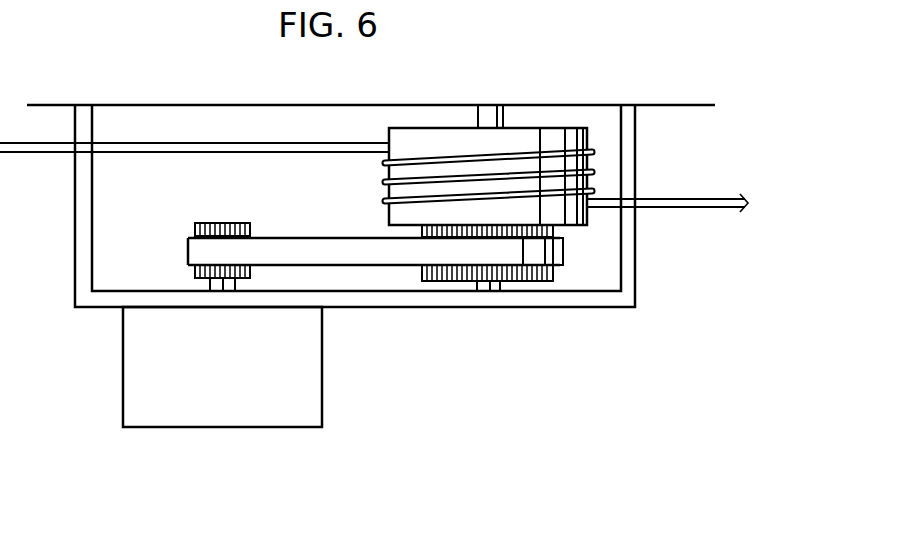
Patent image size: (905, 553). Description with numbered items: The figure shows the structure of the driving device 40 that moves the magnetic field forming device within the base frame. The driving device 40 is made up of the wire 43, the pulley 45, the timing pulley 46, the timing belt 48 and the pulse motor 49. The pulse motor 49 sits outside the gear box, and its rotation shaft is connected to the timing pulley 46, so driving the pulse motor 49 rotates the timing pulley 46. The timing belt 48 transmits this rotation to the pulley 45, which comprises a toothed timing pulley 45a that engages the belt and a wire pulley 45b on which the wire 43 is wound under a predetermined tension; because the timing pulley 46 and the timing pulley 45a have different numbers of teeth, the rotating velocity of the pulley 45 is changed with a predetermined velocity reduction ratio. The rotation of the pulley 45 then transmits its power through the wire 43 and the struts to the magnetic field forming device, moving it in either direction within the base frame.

The driving device 40 is at (478, 366).
The wire 43 is at (708, 208).
The pulley 45 is at (583, 243).
The timing pulley 45a is at (535, 282).
The wire pulley 45b is at (558, 135).
The timing pulley 46 is at (201, 224).
The timing belt 48 is at (375, 256).
The pulse motor 49 is at (270, 408).